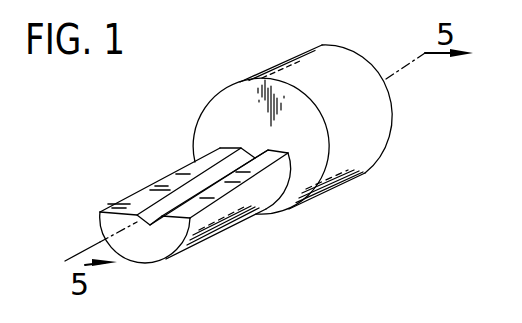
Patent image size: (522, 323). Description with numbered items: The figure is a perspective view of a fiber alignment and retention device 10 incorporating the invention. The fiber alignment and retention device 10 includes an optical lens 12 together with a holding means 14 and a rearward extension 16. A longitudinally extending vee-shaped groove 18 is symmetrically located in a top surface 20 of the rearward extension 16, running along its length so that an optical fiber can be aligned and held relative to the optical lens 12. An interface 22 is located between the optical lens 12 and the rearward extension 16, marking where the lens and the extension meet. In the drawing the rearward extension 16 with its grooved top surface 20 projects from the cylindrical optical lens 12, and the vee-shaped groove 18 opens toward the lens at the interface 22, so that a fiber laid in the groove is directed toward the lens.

The fiber alignment and retention device 10 is at (228, 69).
The optical lens 12 is at (390, 107).
The holding means 14 is at (148, 246).
The rearward extension 16 is at (117, 204).
The longitudinally extending vee-shaped groove 18 is at (180, 192).
The top surface 20 is at (240, 209).
The interface 22 is at (228, 147).